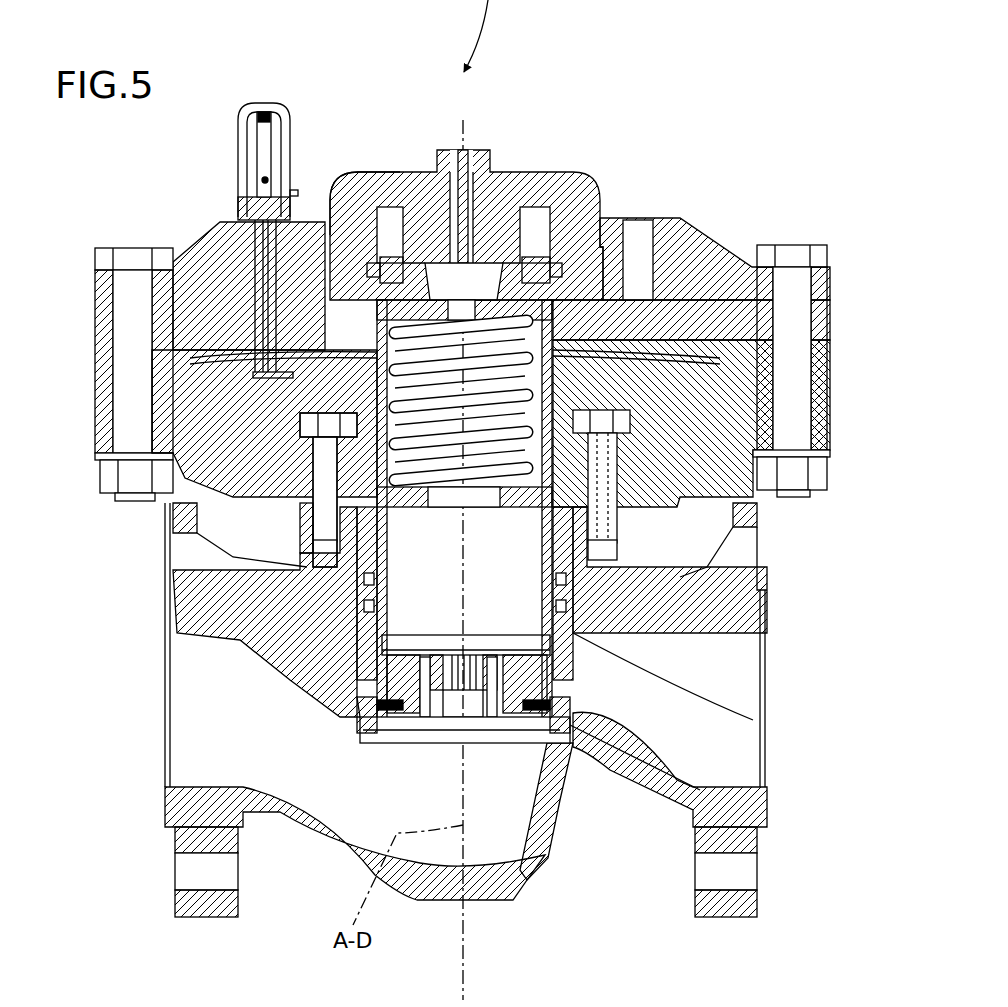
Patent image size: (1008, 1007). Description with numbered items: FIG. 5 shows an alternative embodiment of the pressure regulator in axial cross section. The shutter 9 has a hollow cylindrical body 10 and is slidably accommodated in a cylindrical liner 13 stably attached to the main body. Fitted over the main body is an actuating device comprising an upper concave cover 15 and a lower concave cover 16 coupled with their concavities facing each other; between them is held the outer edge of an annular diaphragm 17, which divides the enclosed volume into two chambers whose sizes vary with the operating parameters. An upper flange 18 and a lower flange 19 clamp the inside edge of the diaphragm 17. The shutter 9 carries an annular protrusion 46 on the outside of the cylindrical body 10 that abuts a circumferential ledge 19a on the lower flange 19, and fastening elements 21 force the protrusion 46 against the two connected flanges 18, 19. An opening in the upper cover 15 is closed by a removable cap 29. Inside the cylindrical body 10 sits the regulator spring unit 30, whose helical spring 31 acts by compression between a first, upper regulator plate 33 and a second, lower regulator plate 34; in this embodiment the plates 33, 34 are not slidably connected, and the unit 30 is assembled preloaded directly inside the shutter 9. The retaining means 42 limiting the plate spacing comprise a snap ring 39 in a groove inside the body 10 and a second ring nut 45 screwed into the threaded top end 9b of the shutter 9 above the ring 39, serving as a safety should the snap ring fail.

The shutter 9 is at (541, 732).
The top end of the shutter 9b is at (702, 242).
The hollow cylindrical body 10 is at (690, 577).
The cylindrical liner 13 is at (335, 580).
The upper concave cover 15 is at (181, 289).
The lower concave cover 16 is at (206, 400).
The annular diaphragm 17 is at (300, 345).
The upper flange 18 is at (713, 337).
The lower flange 19 is at (690, 400).
The circumferential ledge 19a is at (385, 440).
The fastening elements 21 is at (682, 290).
The removable cap 29 is at (343, 167).
The regulator spring unit 30 is at (491, 284).
The helical spring 31 is at (342, 338).
The first regulator plate 33 is at (533, 291).
The second regulator plate 34 is at (575, 636).
The snap ring 39 is at (233, 229).
The retaining means 42 is at (391, 246).
The second ring nut 45 is at (341, 168).
The annular protrusion 46 is at (680, 522).